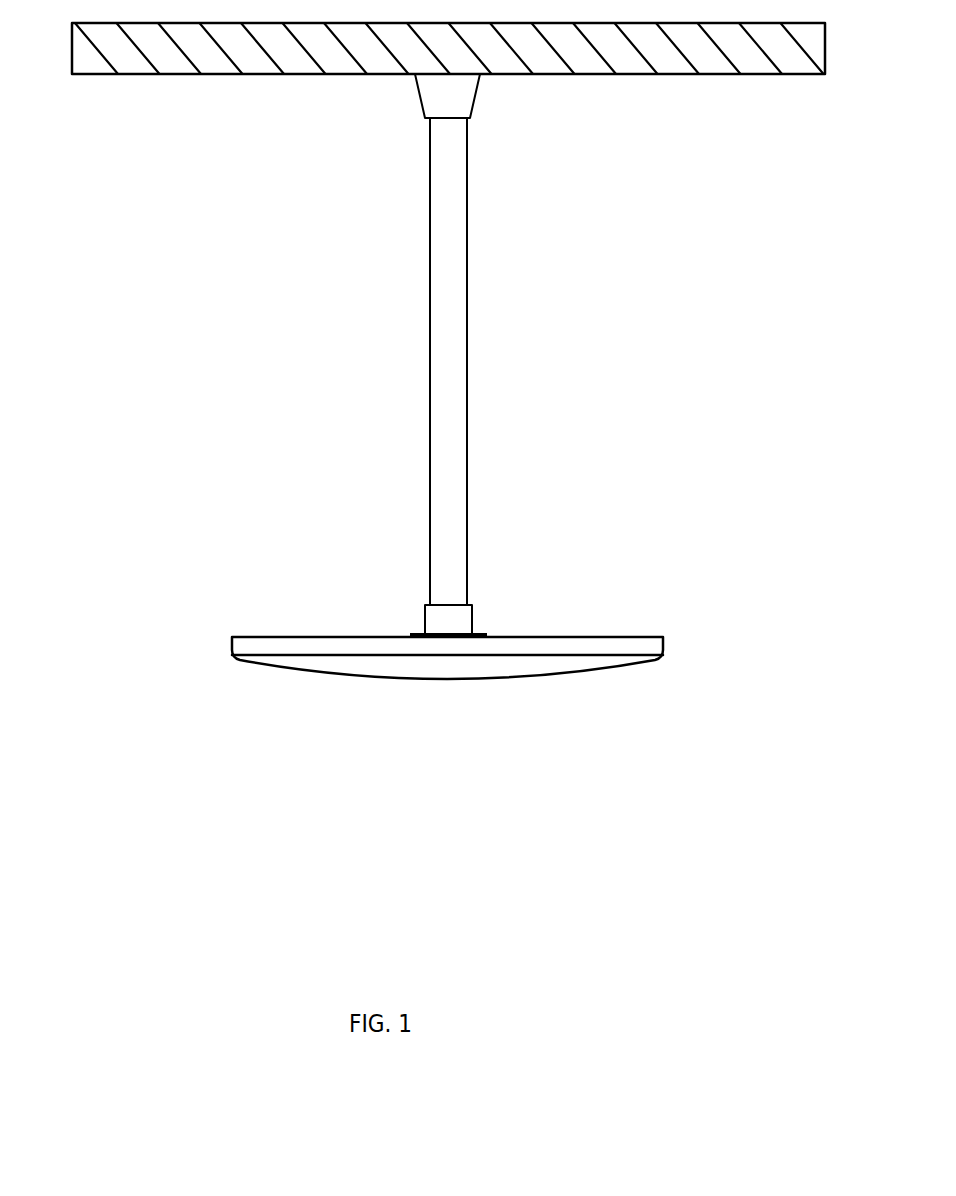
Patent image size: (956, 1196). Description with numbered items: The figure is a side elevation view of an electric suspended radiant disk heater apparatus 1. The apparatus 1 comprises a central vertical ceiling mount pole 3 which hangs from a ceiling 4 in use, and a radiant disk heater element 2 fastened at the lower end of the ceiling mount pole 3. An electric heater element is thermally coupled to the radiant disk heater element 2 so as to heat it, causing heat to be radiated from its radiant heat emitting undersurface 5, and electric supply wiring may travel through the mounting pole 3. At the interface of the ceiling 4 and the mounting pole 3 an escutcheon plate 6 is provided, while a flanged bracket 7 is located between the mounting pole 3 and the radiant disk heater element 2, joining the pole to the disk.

The electric suspended radiant disk heater apparatus 1 is at (714, 205).
The radiant disk heater element 2 is at (702, 608).
The central vertical ceiling mount pole 3 is at (449, 319).
The ceiling 4 is at (257, 74).
The radiant heat emitting undersurface 5 is at (414, 712).
The escutcheon plate 6 is at (475, 102).
The flanged bracket 7 is at (472, 612).